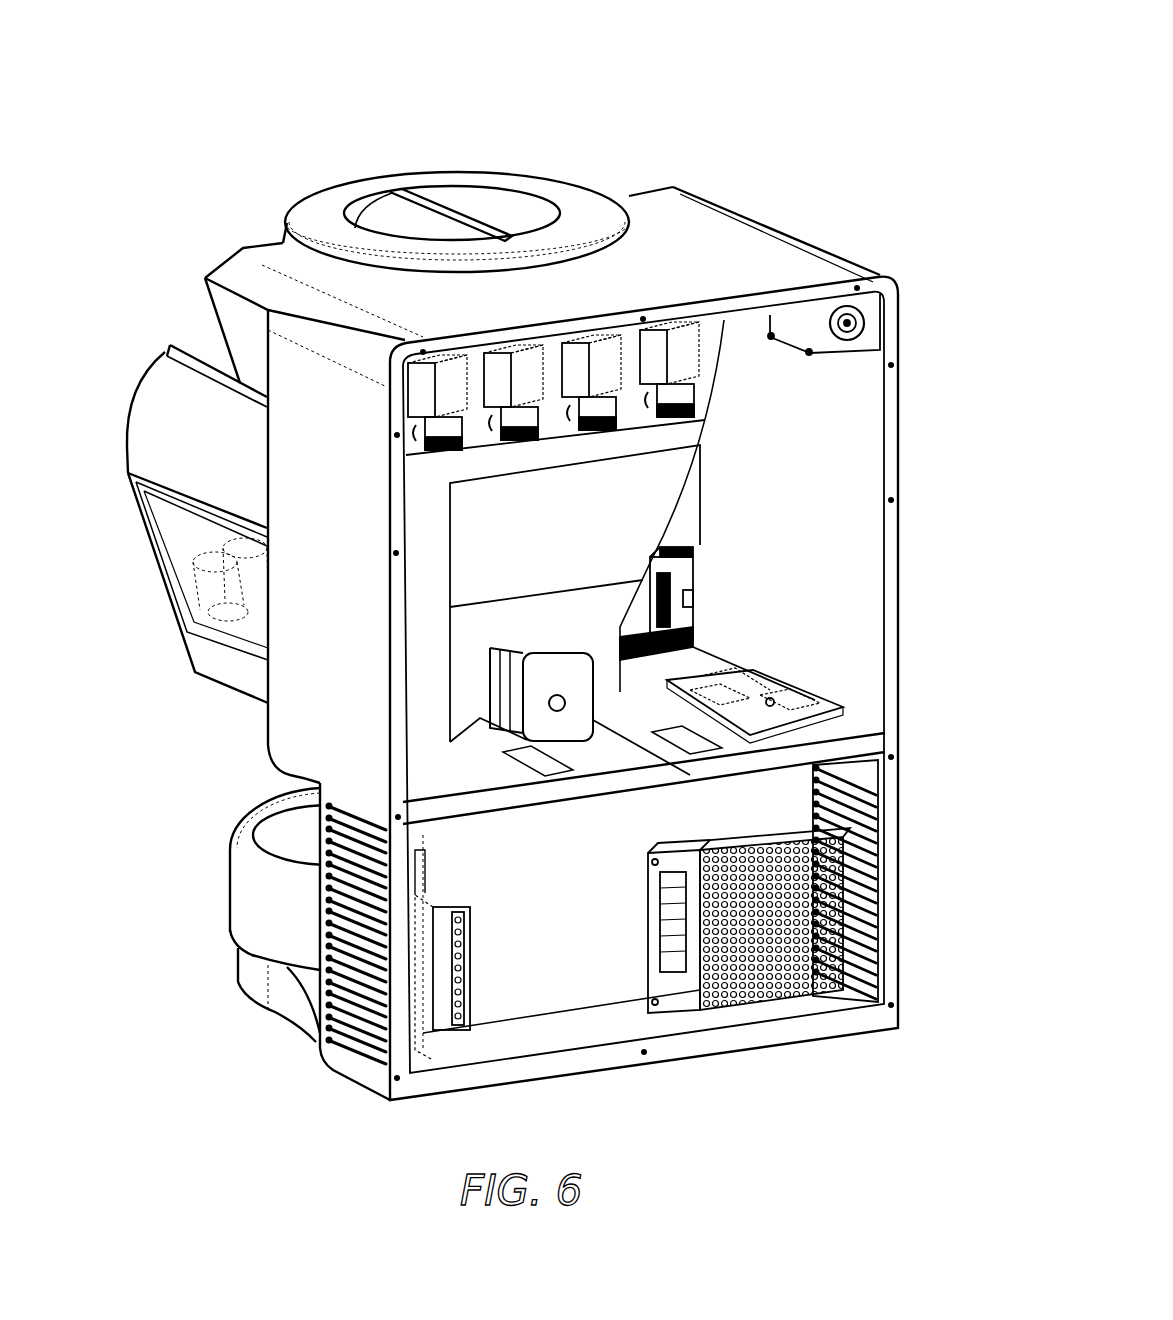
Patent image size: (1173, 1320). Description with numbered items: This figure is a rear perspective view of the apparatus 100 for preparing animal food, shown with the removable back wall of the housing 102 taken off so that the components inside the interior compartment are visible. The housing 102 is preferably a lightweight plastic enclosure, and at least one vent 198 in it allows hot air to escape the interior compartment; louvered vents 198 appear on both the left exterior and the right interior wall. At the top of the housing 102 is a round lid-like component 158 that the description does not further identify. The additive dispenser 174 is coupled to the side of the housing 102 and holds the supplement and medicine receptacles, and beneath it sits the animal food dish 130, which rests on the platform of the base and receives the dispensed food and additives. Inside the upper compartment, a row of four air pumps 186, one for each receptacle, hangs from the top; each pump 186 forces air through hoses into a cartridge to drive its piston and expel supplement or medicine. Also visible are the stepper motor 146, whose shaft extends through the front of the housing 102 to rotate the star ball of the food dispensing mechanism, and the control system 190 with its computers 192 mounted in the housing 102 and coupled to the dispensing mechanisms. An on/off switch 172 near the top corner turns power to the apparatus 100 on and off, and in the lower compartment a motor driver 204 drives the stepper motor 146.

The apparatus for preparing animal food 100 is at (705, 112).
The housing 102 is at (750, 245).
The animal food dish 130 is at (253, 905).
The stepper motor 146 is at (535, 682).
The hopper lid / top cylinder 158 is at (535, 183).
The on/off switch 172 is at (866, 304).
The additive dispenser 174 is at (118, 463).
The air pump 186 is at (447, 390).
The control system 190 is at (728, 624).
The computer 192 is at (700, 615).
The vent 198 is at (833, 823).
The motor driver 204 is at (433, 1003).